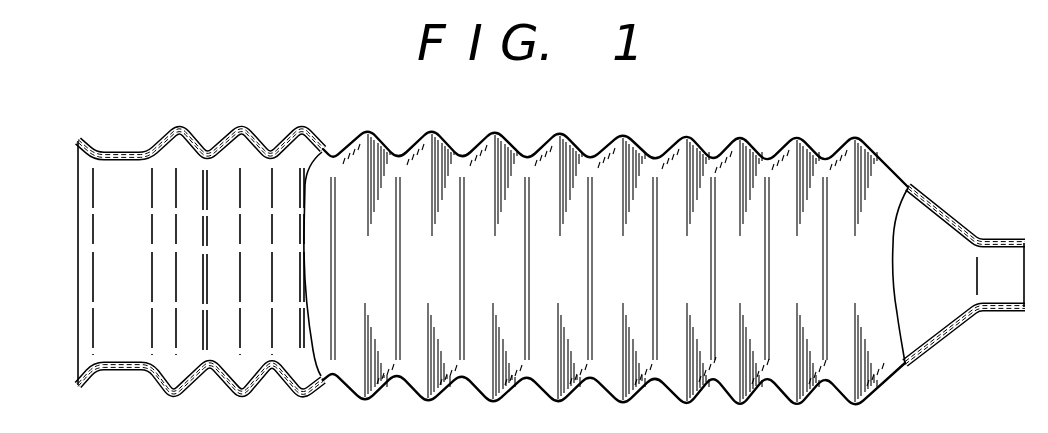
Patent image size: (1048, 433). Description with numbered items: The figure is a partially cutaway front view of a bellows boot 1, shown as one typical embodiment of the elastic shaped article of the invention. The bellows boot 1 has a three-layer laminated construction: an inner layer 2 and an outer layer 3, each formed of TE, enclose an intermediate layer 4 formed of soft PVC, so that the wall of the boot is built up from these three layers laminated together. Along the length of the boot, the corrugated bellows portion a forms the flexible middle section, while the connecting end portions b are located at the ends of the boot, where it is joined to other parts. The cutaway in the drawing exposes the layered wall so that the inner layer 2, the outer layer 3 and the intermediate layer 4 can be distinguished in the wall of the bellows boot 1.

The bellows boot 1 is at (551, 247).
The bellows portion a is at (462, 150).
The connecting end portions b is at (82, 140).
The inner layer 2 is at (128, 163).
The outer layer 3 is at (138, 152).
The intermediate layer 4 is at (113, 163).